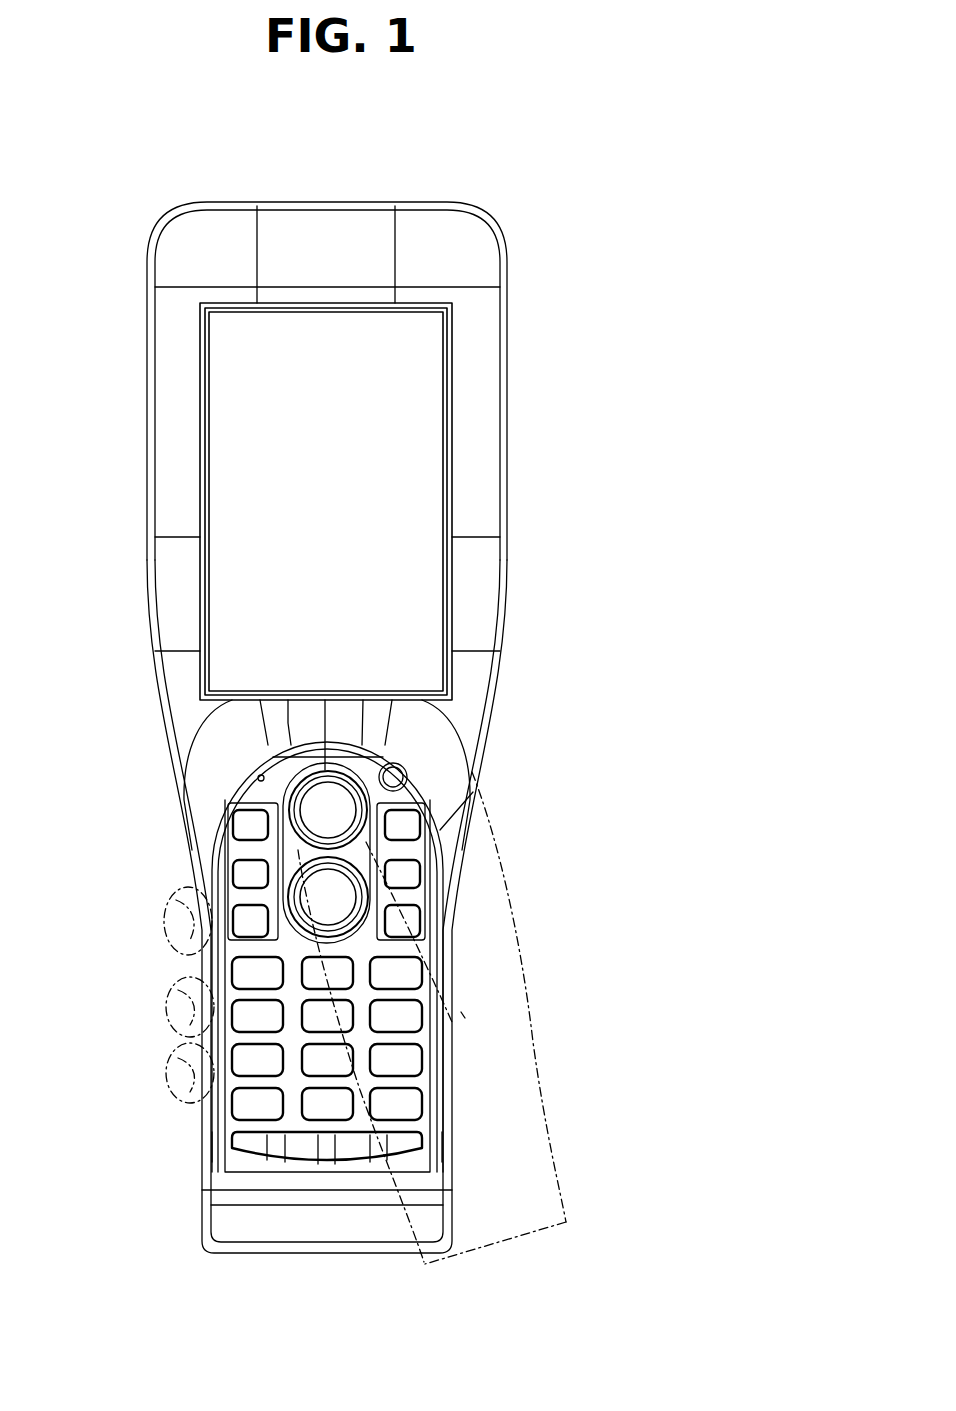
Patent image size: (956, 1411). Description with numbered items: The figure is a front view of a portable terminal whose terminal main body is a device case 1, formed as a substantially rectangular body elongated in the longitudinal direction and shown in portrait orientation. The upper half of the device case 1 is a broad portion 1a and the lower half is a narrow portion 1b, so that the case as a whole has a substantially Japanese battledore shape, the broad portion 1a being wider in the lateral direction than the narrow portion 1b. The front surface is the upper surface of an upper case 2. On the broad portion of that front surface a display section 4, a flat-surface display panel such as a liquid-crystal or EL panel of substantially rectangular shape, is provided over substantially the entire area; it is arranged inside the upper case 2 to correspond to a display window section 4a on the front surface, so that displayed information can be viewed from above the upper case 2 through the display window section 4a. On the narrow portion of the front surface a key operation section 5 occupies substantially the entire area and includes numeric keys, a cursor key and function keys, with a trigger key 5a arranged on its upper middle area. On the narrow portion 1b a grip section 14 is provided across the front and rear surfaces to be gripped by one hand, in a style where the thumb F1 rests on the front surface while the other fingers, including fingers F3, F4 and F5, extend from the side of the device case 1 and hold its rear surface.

The device case 1 is at (228, 200).
The broad portion 1a is at (516, 492).
The narrow portion 1b is at (465, 984).
The upper case 2 is at (368, 232).
The display section 4 is at (420, 369).
The display window section 4a is at (214, 366).
The key operation section 5 is at (410, 915).
The trigger key 5a is at (310, 802).
The grip section 14 is at (449, 1079).
The thumb F1 is at (298, 850).
The finger F3 is at (167, 938).
The finger F4 is at (167, 1028).
The finger F5 is at (170, 1085).